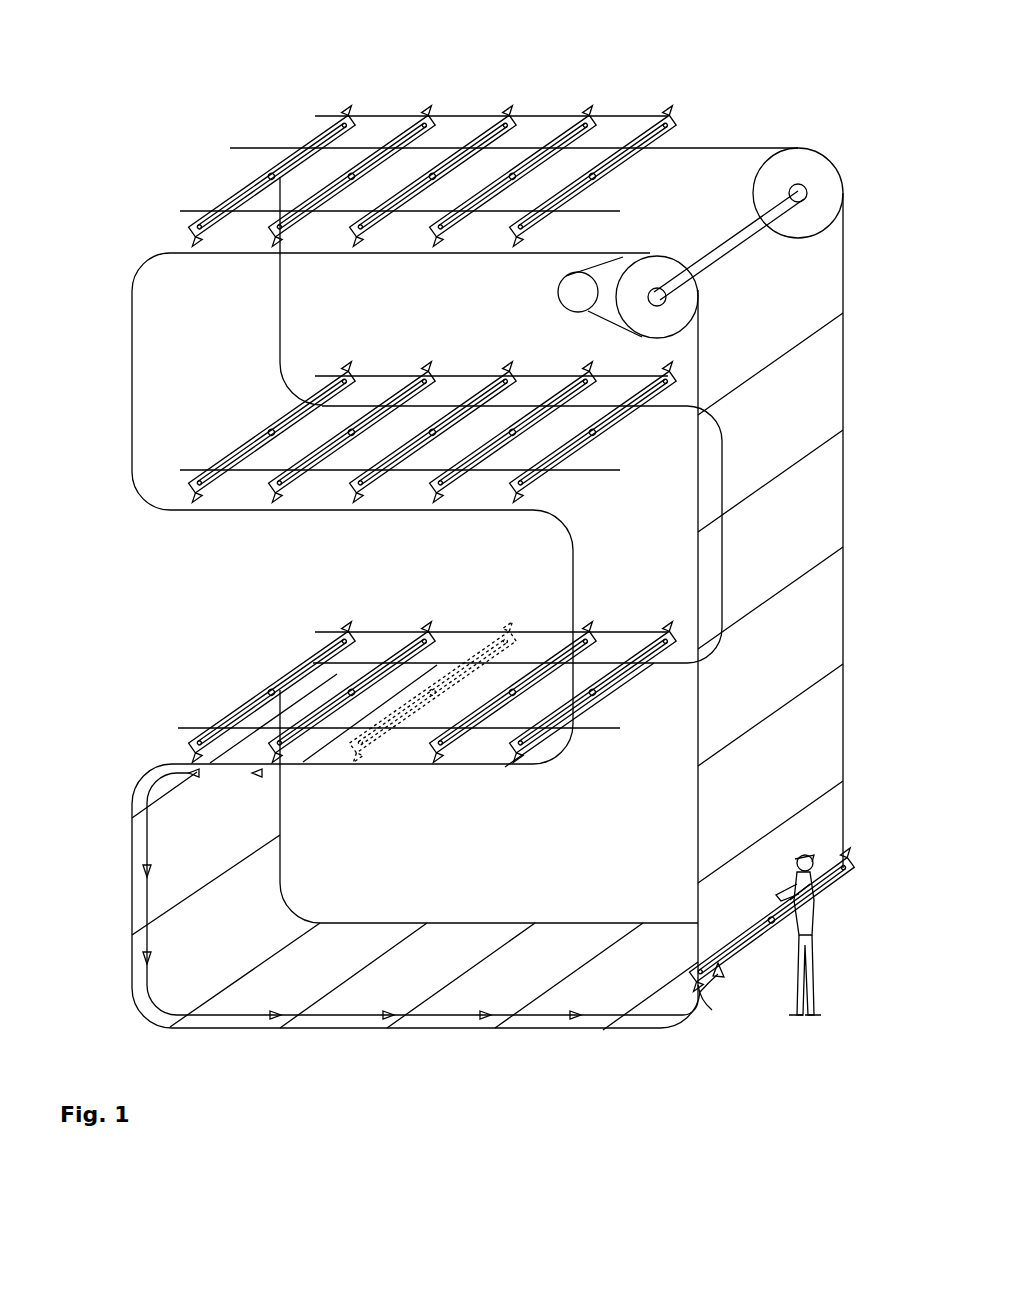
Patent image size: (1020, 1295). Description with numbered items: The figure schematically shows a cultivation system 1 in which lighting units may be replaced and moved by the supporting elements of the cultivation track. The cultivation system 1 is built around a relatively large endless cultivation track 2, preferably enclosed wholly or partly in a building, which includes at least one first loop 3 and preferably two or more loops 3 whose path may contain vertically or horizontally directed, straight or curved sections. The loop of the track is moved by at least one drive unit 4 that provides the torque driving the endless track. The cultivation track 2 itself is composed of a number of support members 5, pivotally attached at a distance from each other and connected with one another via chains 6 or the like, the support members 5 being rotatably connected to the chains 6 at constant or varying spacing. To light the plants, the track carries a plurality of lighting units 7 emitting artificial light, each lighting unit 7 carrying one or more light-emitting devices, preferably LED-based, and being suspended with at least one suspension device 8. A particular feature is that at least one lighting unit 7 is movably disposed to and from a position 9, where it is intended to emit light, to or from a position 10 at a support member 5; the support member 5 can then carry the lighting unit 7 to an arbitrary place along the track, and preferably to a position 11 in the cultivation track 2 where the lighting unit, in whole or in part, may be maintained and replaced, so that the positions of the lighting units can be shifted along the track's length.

The cultivation system 1 is at (536, 132).
The endless cultivation track 2 is at (728, 82).
The loop 3 is at (107, 349).
The drive unit 4 is at (575, 308).
The support member 5 is at (822, 556).
The chain 6 is at (757, 147).
The lighting unit 7 is at (522, 572).
The suspension device 8 is at (502, 120).
The position where lighting unit emits light 9 is at (400, 120).
The position at a support member 10 is at (838, 888).
The maintenance and replacement position 11 is at (708, 1050).